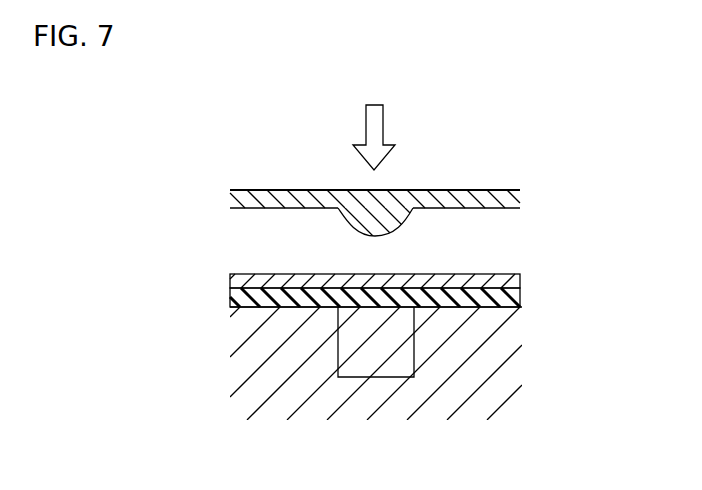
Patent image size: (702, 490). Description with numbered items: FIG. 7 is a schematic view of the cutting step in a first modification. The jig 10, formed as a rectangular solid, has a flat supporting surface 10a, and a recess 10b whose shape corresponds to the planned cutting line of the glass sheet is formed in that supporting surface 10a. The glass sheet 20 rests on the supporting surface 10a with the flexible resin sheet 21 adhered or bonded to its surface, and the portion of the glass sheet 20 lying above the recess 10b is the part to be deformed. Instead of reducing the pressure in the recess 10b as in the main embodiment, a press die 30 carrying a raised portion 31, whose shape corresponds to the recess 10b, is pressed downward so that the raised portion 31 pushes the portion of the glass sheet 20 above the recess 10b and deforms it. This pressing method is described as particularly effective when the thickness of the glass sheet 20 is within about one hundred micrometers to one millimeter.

The jig 10 is at (428, 361).
The supporting surface 10a is at (522, 297).
The recess 10b is at (412, 343).
The glass sheet 20 is at (477, 274).
The resin sheet 21 is at (500, 288).
The press die 30 is at (375, 190).
The raised portion 31 is at (405, 223).